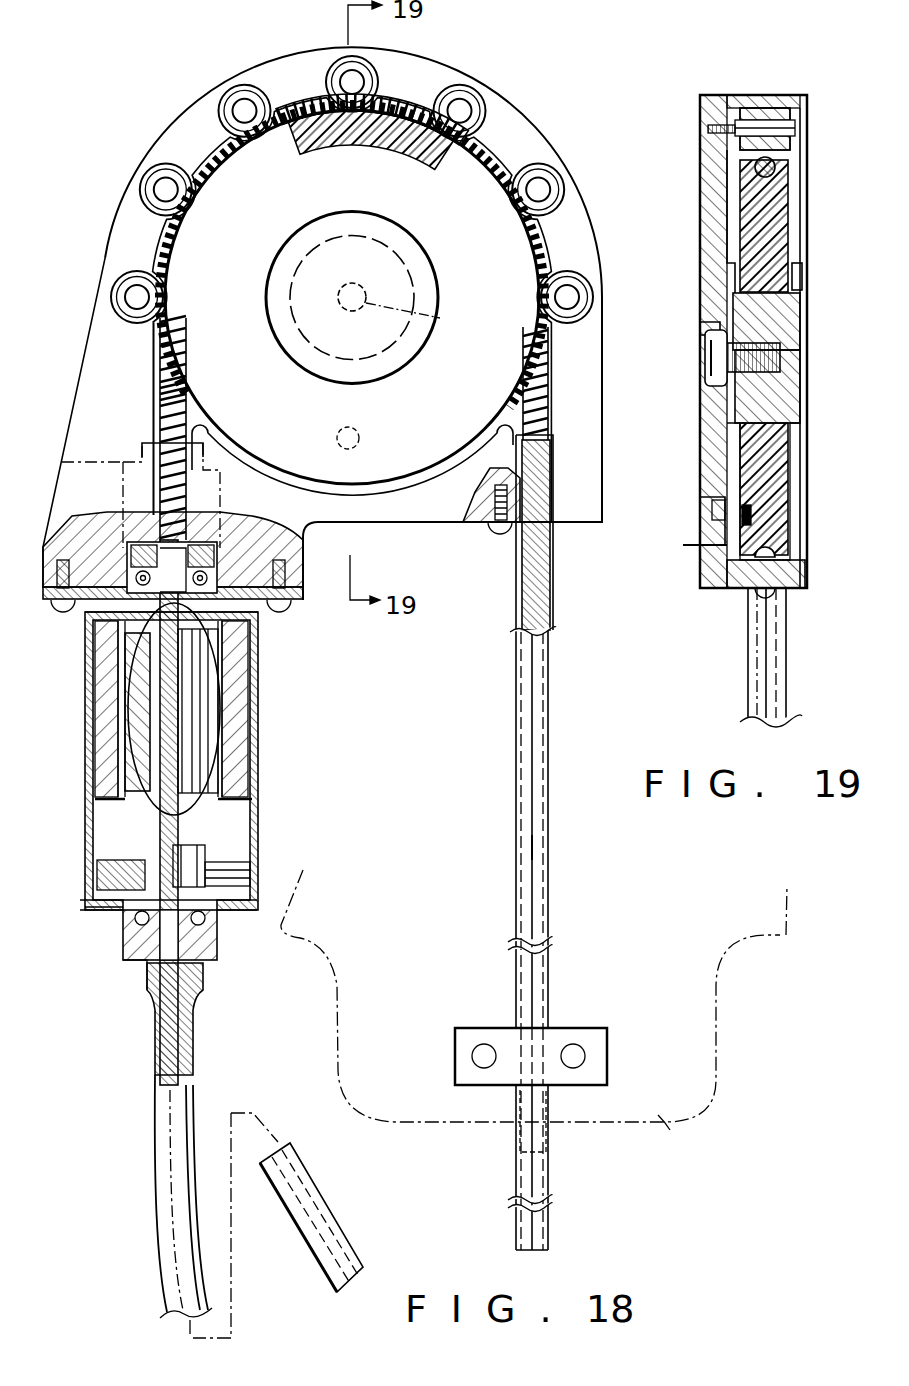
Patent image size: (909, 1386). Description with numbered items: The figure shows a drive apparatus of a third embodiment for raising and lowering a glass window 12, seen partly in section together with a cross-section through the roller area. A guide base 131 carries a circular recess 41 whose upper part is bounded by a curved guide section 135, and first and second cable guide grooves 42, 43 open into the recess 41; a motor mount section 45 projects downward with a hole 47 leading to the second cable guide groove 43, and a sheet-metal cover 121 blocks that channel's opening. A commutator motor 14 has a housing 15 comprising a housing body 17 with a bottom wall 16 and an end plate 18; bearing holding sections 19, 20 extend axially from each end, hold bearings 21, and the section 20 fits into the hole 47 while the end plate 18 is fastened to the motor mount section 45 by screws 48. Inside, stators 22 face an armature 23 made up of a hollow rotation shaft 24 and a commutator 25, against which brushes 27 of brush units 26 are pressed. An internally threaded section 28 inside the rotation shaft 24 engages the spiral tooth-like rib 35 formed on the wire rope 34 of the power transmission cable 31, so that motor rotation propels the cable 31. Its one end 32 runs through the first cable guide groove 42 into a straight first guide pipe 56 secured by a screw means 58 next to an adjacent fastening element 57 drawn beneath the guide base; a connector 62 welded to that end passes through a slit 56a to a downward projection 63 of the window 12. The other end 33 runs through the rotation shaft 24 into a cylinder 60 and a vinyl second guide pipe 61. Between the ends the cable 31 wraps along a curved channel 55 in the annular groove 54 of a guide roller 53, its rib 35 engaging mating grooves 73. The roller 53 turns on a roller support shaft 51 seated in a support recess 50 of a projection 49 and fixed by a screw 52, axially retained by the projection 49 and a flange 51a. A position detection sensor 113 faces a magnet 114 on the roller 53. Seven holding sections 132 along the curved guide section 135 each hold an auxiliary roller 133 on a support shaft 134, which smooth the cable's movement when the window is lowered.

In FIG. 18, the glass window 12 is at (782, 936).
In FIG. 18, the commutator motor 14 is at (258, 770).
In FIG. 18, the housing 15 is at (95, 907).
In FIG. 18, the bottom wall 16 is at (112, 925).
In FIG. 18, the housing body 17 is at (88, 690).
In FIG. 18, the end plate 18 is at (90, 622).
In FIG. 18, the bearing holding section 19 is at (128, 960).
In FIG. 18, the bearing holding section 20 is at (128, 562).
In FIG. 18, the bearing 21 is at (215, 575).
In FIG. 18, the stator 22 is at (240, 722).
In FIG. 18, the armature 23 is at (215, 808).
In FIG. 18, the rotation shaft 24 is at (135, 830).
In FIG. 18, the commutator 25 is at (200, 860).
In FIG. 18, the brush unit 26 is at (110, 862).
In FIG. 18, the brush 27 is at (110, 892).
In FIG. 18, the internally threaded section 28 is at (65, 540).
In FIG. 18, the power transmission cable 31 is at (160, 422).
In FIG. 18, the one end 32 is at (548, 1150).
In FIG. 18, the other end 33 is at (313, 1208).
In FIG. 18, the wire rope 34 is at (160, 400).
In FIG. 18, the tooth-like rib 35 is at (165, 386).
In FIG. 18, the recess 41 is at (400, 492).
In FIG. 19, the recess 41 is at (730, 463).
In FIG. 18, the first cable guide groove 42 is at (552, 500).
In FIG. 18, the second cable guide groove 43 is at (142, 448).
In FIG. 18, the motor mount section 45 is at (305, 590).
In FIG. 18, the hole 47 is at (210, 545).
In FIG. 18, the screw 48 is at (62, 612).
In FIG. 19, the projection 49 is at (728, 275).
In FIG. 19, the support recess 50 is at (720, 328).
In FIG. 19, the roller support shaft 51 is at (736, 405).
In FIG. 18, the flange 51a is at (412, 362).
In FIG. 19, the flange 51a is at (800, 278).
In FIG. 18, the screw 52 is at (440, 318).
In FIG. 19, the screw 52 is at (710, 378).
In FIG. 18, the guide roller 53 is at (500, 240).
In FIG. 19, the guide roller 53 is at (782, 222).
In FIG. 19, the annular groove 54 is at (790, 575).
In FIG. 18, the curved channel 55 is at (303, 100).
In FIG. 19, the curved channel 55 is at (776, 168).
In FIG. 18, the first guide pipe 56 is at (548, 778).
In FIG. 19, the first guide pipe 56 is at (758, 658).
In FIG. 18, the slit 56a is at (535, 845).
In FIG. 18, the nut 57 is at (465, 522).
In FIG. 18, the screw means 58 is at (498, 534).
In FIG. 19, the screw means 58 is at (758, 598).
In FIG. 18, the cylinder 60 is at (140, 995).
In FIG. 18, the second guide pipe 61 is at (160, 1142).
In FIG. 18, the connector 62 is at (590, 1028).
In FIG. 18, the downward projection 63 is at (668, 1125).
In FIG. 18, the mating groove 73 is at (388, 140).
In FIG. 19, the mating groove 73 is at (770, 552).
In FIG. 19, the position detection sensor 113 is at (718, 513).
In FIG. 18, the magnet 114 is at (360, 438).
In FIG. 19, the magnet 114 is at (752, 517).
In FIG. 18, the cover 121 is at (62, 462).
In FIG. 18, the guide base 131 is at (85, 352).
In FIG. 19, the guide base 131 is at (705, 546).
In FIG. 18, the holding section 132 is at (162, 160).
In FIG. 18, the auxiliary roller 133 is at (236, 96).
In FIG. 19, the auxiliary roller 133 is at (745, 112).
In FIG. 18, the support shaft 134 is at (240, 110).
In FIG. 19, the support shaft 134 is at (778, 128).
In FIG. 18, the curved guide section 135 is at (270, 72).
In FIG. 19, the curved guide section 135 is at (790, 100).